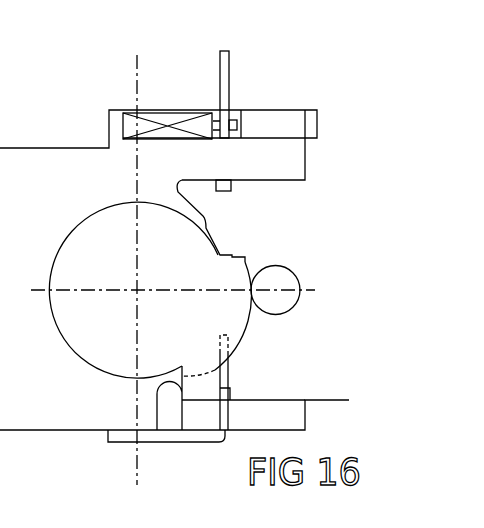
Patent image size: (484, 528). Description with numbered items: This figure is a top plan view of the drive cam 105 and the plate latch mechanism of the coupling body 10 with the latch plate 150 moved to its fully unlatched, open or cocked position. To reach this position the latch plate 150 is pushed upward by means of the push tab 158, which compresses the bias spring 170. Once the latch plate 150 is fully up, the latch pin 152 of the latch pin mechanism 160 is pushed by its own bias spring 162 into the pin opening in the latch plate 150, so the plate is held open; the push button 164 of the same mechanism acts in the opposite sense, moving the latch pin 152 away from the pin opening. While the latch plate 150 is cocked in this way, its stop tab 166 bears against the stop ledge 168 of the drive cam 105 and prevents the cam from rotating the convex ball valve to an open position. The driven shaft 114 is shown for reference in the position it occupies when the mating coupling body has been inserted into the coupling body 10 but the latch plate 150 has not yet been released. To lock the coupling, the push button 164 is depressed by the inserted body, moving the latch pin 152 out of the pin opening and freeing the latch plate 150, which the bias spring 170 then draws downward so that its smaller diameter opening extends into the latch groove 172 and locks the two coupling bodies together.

The coupling body 10 is at (46, 218).
The drive cam 105 is at (108, 345).
The driven shaft 114 is at (273, 272).
The latch plate 150 is at (226, 62).
The latch pin 152 is at (232, 125).
The push tab 158 is at (143, 437).
The latch pin mechanism 160 is at (151, 97).
The bias spring 162 is at (168, 127).
The push button 164 is at (311, 118).
The stop tab 166 is at (167, 418).
The stop ledge 168 is at (182, 393).
The bias spring 170 is at (233, 253).
The latch groove 172 is at (226, 190).